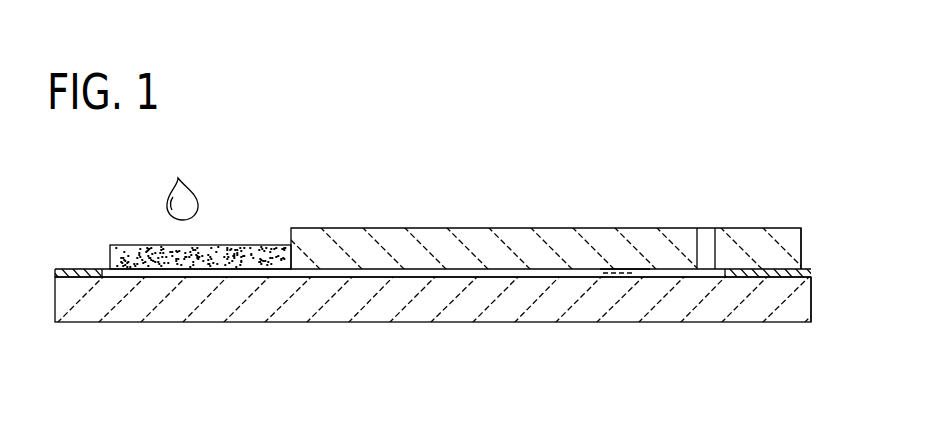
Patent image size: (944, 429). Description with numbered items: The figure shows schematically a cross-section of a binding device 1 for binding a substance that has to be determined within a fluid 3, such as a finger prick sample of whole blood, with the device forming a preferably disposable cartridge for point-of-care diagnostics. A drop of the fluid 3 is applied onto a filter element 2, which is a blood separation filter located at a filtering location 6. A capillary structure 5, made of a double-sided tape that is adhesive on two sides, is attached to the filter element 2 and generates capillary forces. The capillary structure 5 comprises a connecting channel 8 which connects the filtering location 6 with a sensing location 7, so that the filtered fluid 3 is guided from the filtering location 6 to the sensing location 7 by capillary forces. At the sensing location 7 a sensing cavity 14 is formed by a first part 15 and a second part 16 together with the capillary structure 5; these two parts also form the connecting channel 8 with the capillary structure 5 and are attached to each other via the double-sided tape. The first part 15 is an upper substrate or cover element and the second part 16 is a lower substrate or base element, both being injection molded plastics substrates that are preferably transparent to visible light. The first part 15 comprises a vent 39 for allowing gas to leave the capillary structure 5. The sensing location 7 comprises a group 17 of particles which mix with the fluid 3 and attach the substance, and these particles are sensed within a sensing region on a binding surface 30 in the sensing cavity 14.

The binding device 1 is at (558, 142).
The filter element 2 is at (108, 267).
The fluid 3 is at (180, 177).
The capillary structure 5 is at (92, 266).
The filtering location 6 is at (190, 278).
The sensing location 7 is at (628, 283).
The connecting channel 8 is at (398, 278).
The sensing cavity 14 is at (617, 263).
The first part 15 is at (801, 250).
The second part 16 is at (813, 300).
The group of particles 17 is at (618, 279).
The binding surface 30 is at (640, 262).
The vent 39 is at (703, 238).